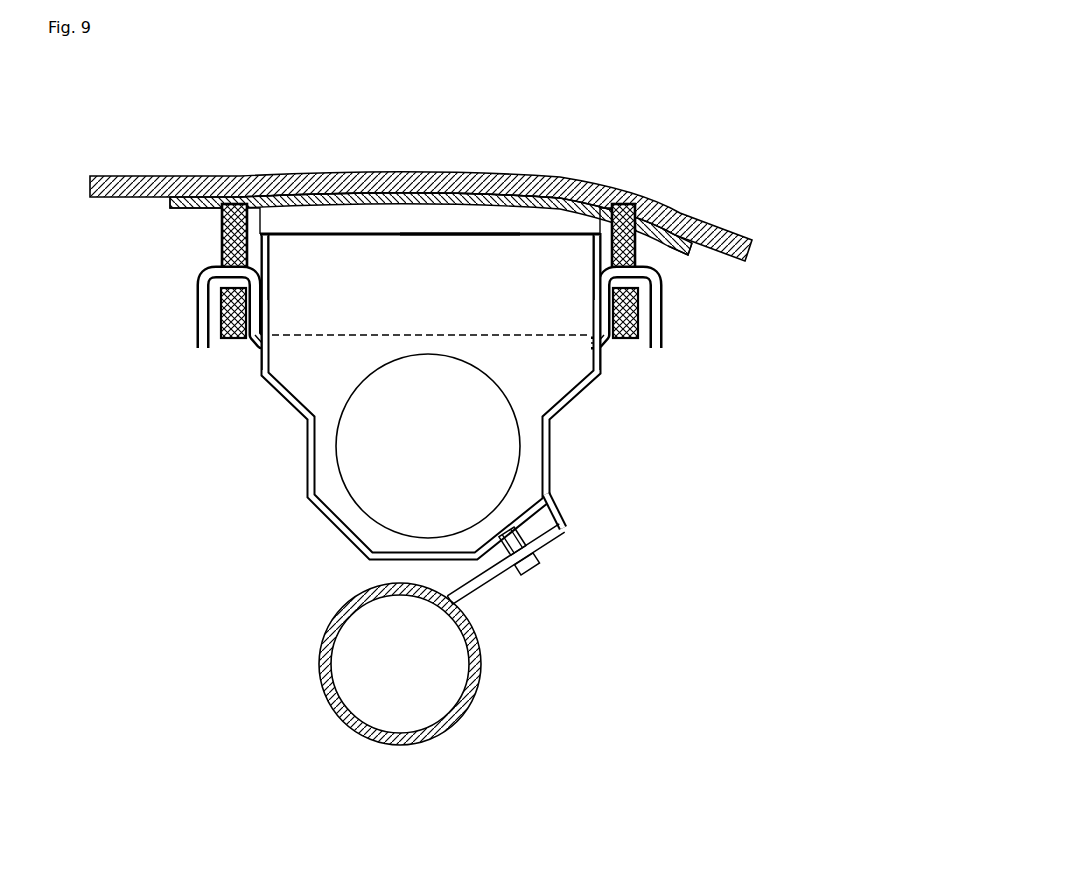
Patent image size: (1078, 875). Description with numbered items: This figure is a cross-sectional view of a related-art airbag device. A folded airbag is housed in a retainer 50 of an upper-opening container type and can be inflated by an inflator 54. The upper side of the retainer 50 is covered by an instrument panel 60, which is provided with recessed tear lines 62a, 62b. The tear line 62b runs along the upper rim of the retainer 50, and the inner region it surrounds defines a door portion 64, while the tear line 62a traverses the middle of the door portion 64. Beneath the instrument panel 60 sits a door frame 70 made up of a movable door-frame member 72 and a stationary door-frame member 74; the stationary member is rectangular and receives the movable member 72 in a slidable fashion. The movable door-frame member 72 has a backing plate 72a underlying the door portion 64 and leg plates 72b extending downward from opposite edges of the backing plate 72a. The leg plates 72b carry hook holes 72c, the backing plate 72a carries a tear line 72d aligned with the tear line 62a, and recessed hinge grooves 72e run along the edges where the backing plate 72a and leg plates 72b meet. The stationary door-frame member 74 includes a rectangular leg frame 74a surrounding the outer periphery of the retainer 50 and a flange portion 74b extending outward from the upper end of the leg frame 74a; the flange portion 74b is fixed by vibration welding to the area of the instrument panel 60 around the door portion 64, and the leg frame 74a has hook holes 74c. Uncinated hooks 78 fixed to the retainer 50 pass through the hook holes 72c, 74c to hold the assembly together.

The retainer 50 is at (562, 412).
The inflator 54 is at (460, 357).
The instrument panel 60 is at (733, 225).
The tear line 62a is at (418, 174).
The tear line 62b is at (229, 175).
The door portion 64 is at (625, 167).
The door frame 70 is at (141, 329).
The movable door-frame member 72 is at (363, 211).
The backing plate 72a is at (480, 236).
The leg plates 72b is at (271, 242).
The hook holes 72c is at (270, 300).
The tear line 72d is at (426, 236).
The hinge grooves 72e is at (250, 210).
The stationary door-frame member 74 is at (223, 227).
The leg frame 74a is at (203, 268).
The flange portion 74b is at (190, 207).
The hook holes 74c is at (197, 292).
The hooks 78 is at (236, 346).